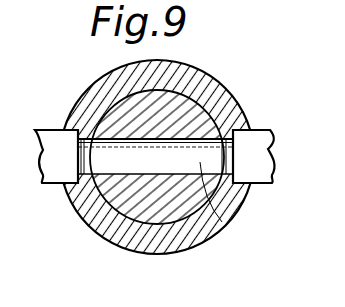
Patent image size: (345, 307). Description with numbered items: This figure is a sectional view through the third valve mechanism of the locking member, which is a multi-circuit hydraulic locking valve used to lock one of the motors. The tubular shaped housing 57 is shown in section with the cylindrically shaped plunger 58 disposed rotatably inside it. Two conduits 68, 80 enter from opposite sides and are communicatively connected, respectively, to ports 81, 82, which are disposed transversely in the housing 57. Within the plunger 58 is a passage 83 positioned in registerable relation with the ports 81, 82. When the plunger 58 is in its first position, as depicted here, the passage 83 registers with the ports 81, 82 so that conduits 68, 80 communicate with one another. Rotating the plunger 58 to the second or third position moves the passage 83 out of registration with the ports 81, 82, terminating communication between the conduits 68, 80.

The housing 57 is at (187, 77).
The plunger 58 is at (177, 115).
The conduit 68 is at (52, 142).
The conduit 80 is at (256, 138).
The port 81 is at (85, 163).
The port 82 is at (223, 180).
The passage 83 is at (200, 162).